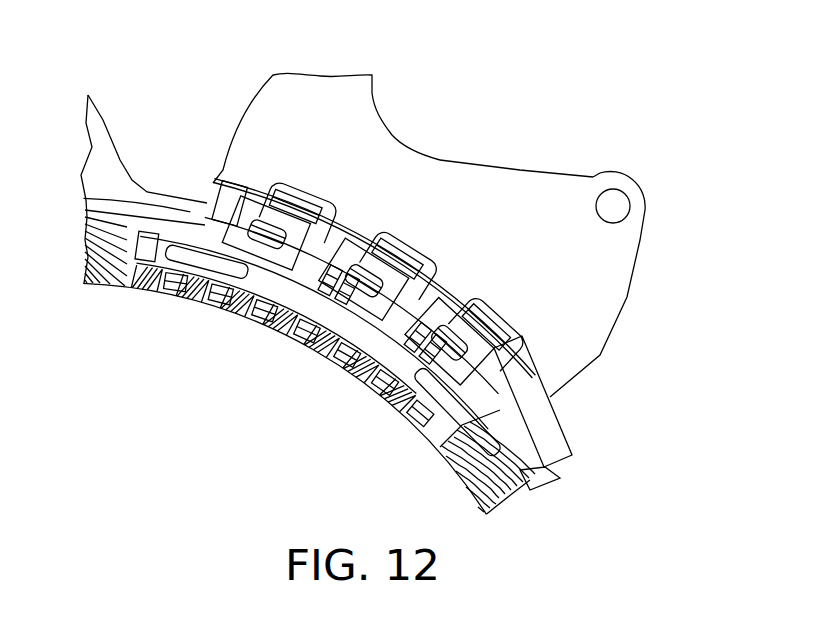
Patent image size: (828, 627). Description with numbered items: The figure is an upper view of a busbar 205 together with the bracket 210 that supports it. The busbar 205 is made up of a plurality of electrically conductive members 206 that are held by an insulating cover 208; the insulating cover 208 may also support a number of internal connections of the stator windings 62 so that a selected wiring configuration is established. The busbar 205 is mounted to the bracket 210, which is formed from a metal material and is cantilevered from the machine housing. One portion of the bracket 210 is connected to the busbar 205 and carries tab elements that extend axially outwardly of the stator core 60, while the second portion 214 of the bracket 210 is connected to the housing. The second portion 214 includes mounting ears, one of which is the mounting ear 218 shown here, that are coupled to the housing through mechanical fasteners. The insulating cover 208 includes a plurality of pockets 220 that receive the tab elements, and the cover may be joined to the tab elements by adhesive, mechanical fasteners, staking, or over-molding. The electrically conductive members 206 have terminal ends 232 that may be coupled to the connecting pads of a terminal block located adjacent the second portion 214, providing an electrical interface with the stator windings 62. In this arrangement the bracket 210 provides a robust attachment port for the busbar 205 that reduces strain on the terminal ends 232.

The stator core 60 is at (178, 205).
The stator windings 62 is at (487, 480).
The busbar 205 is at (528, 298).
The electrically conductive members 206 is at (297, 192).
The insulating cover 208 is at (562, 474).
The bracket 210 is at (442, 117).
The second portion 214 is at (513, 210).
The mounting ear 218 is at (626, 178).
The pockets 220 is at (513, 398).
The terminal ends 232 is at (487, 337).